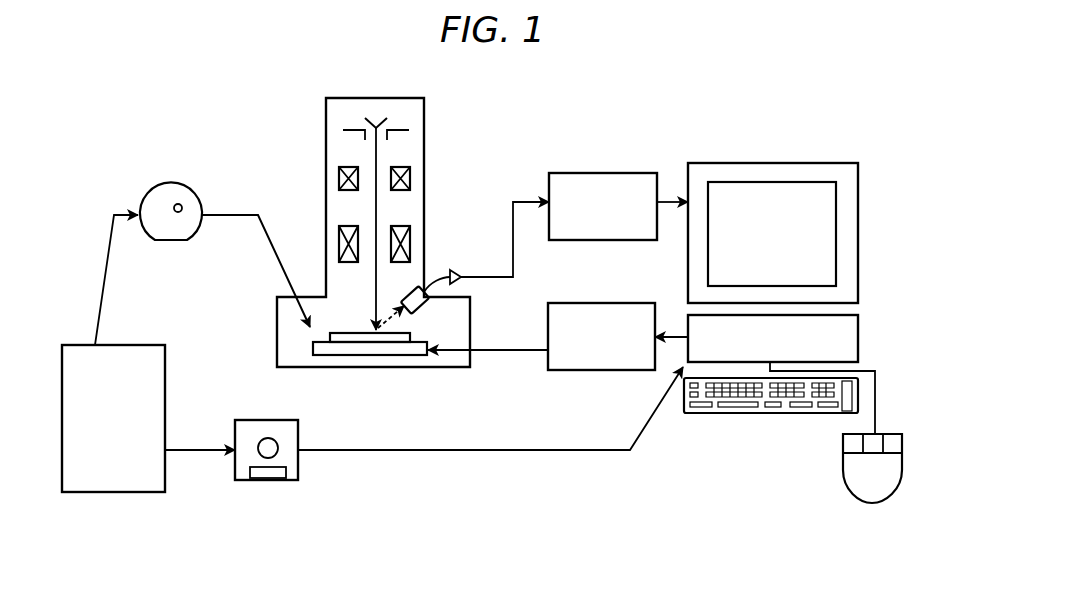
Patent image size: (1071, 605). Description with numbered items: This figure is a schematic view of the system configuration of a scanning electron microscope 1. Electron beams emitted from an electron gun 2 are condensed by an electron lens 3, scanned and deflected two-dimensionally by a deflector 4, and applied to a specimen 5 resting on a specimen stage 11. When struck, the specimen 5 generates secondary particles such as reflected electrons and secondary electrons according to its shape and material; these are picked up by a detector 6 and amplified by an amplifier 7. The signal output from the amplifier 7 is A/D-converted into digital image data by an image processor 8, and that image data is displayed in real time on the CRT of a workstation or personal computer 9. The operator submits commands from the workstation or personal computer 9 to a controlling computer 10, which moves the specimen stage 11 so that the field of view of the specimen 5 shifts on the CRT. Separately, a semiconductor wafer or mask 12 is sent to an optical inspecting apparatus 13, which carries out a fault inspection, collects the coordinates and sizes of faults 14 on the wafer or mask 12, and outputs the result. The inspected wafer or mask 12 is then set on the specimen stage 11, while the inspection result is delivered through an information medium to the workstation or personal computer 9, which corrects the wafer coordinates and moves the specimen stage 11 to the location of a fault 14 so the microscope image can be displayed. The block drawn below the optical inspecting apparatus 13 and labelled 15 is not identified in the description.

The scanning electron microscope 1 is at (352, 105).
The electron gun 2 is at (377, 166).
The electron lens 3 is at (340, 177).
The deflector 4 is at (338, 238).
The specimen 5 is at (352, 338).
The detector 6 is at (428, 308).
The amplifier 7 is at (455, 271).
The image processor 8 is at (597, 173).
The workstation or personal computer 9 is at (770, 163).
The controlling computer 10 is at (595, 303).
The specimen stage 11 is at (408, 352).
The semiconductor wafer or mask 12 is at (157, 189).
The optical inspecting apparatus 13 is at (118, 492).
The faults 14 is at (181, 205).
The driver unit 15 is at (270, 480).